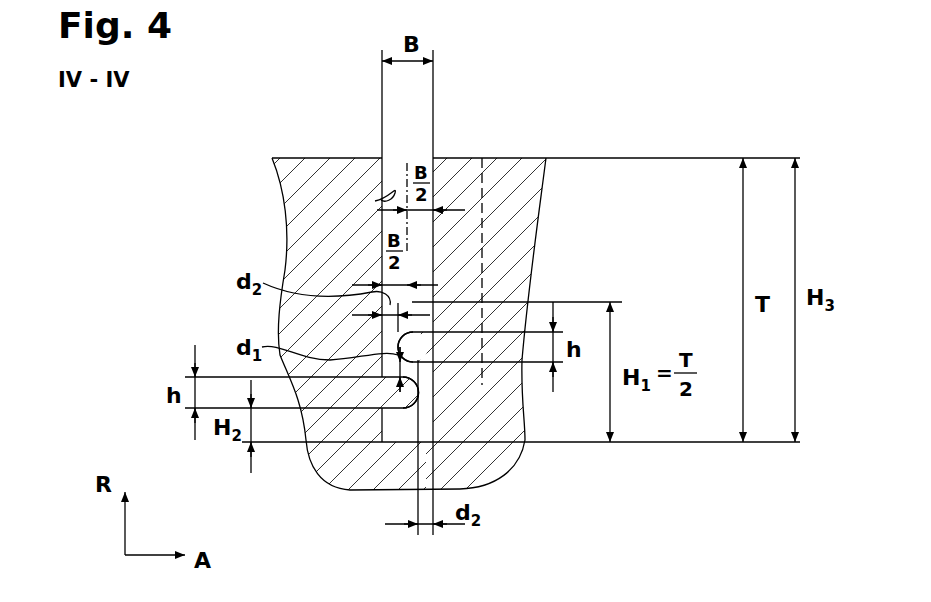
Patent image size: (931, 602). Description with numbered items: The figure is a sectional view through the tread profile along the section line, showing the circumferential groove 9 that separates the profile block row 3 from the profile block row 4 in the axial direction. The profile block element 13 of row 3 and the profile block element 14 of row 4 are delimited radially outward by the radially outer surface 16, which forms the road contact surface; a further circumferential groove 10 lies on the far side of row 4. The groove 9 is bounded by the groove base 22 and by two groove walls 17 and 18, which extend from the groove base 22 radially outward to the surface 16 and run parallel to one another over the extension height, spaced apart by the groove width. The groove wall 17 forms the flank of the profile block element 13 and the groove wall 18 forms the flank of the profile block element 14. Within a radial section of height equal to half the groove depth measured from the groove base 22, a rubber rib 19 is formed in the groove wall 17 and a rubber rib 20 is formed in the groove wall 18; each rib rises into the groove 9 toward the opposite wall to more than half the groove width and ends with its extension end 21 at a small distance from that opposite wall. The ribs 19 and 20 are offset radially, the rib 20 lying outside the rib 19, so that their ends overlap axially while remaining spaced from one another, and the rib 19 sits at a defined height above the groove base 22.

The profile block row 3 is at (330, 177).
The profile block row 4 is at (493, 183).
The circumferential groove 9 is at (397, 177).
The circumferential groove 10 is at (508, 207).
The profile block element 13 is at (359, 180).
The profile block element 14 is at (527, 183).
The radially outer surface 16 is at (290, 158).
The groove wall 17 is at (375, 201).
The groove wall 18 is at (425, 242).
The rubber rib 19 is at (425, 385).
The rubber rib 20 is at (425, 352).
The extension end 21 is at (398, 362).
The groove base 22 is at (400, 432).